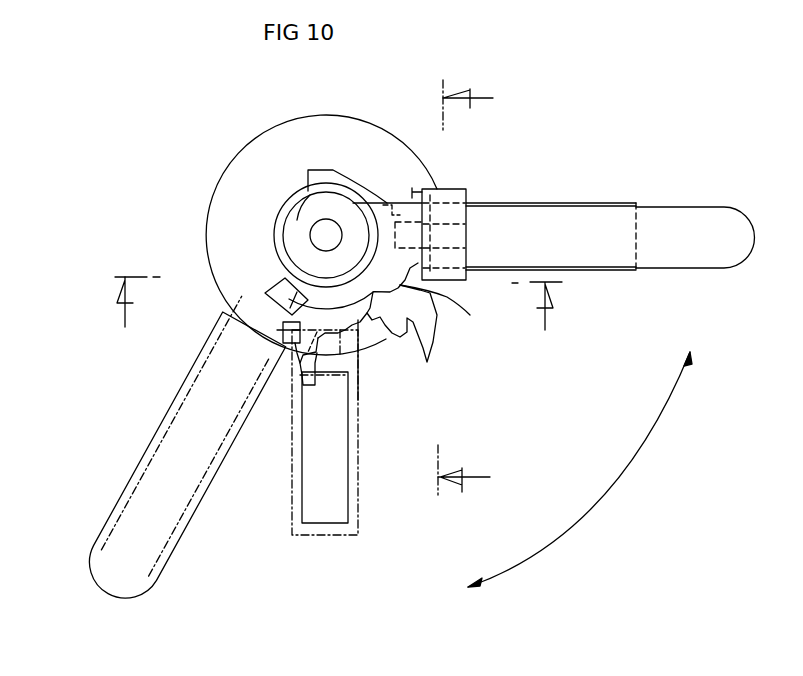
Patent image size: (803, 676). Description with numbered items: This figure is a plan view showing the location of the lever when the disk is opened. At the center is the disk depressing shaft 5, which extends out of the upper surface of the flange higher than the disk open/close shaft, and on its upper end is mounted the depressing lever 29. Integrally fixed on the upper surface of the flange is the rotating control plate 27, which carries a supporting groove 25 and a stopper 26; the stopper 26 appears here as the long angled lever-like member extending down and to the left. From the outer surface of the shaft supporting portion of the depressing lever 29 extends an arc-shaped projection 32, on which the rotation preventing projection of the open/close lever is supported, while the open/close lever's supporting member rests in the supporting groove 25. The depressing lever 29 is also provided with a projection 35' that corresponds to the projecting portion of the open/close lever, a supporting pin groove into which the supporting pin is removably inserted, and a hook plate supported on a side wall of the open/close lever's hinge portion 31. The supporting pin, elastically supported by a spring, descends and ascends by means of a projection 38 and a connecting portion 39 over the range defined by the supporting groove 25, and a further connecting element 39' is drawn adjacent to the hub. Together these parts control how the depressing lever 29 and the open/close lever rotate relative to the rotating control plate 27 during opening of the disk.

The disk depressing shaft 5 is at (325, 220).
The supporting groove 25 is at (427, 359).
The stopper 26 is at (288, 330).
The rotating control plate 27 is at (206, 234).
The depressing lever 29 is at (683, 222).
The arm 31 is at (562, 203).
The arc-shaped projection 32 is at (362, 190).
The projection 35' is at (456, 309).
The projection 38 is at (375, 312).
The connecting portion 39 is at (265, 287).
The pawl 39' is at (273, 191).